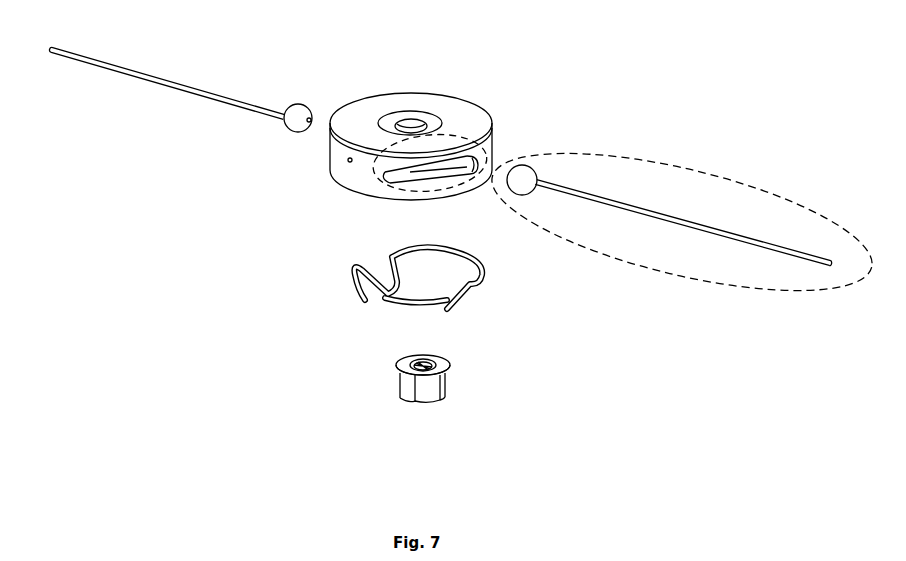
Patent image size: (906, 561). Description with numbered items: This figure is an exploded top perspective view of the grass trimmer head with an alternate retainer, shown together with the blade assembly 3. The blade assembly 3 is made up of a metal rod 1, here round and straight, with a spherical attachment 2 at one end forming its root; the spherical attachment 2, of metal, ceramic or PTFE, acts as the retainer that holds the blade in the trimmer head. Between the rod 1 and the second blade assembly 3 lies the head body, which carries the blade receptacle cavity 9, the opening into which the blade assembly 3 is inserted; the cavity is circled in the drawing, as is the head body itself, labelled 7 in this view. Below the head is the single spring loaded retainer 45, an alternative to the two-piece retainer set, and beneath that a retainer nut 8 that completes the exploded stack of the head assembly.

The metal rod 1 is at (108, 69).
The spherical attachment 2 is at (278, 127).
The blade assembly 3 is at (707, 173).
The spool / hub body 7 is at (388, 89).
The retainer nut 8 is at (456, 364).
The blade receptacle cavity 9 is at (486, 148).
The single spring loaded retainer 45 is at (349, 292).